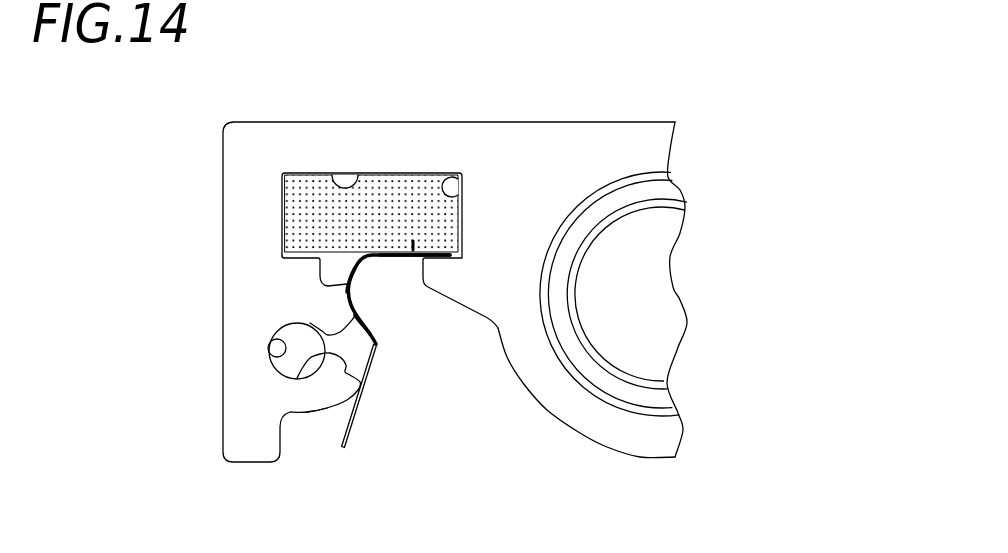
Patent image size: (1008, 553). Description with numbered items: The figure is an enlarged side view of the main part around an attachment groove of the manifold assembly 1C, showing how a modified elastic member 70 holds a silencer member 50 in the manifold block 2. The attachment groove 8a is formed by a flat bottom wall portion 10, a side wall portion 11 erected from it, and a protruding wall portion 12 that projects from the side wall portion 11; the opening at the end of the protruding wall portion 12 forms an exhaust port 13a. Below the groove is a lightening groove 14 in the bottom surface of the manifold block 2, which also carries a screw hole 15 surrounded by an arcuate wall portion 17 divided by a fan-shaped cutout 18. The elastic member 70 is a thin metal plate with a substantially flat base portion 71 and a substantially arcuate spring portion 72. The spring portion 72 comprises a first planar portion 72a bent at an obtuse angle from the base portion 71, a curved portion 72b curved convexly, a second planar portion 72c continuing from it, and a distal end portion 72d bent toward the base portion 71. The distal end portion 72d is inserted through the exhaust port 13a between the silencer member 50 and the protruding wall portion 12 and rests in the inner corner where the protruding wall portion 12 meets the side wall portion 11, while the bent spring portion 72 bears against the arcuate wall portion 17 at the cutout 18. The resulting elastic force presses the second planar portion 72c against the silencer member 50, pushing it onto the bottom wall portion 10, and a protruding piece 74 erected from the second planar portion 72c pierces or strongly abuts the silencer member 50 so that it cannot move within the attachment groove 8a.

The manifold assembly 1C is at (747, 62).
The manifold block 2 is at (612, 423).
The attachment groove 8a is at (293, 147).
The bottom wall portion 10 is at (332, 175).
The side wall portion 11 is at (447, 177).
The protruding wall portion 12 is at (435, 275).
The exhaust port 13a is at (321, 264).
The lightening groove 14 is at (490, 399).
The screw hole 15 is at (293, 357).
The arcuate wall portion 17 is at (316, 429).
The cutout 18 is at (300, 363).
The silencer member 50 is at (310, 215).
The elastic member 70 is at (369, 439).
The base portion 71 is at (367, 375).
The spring portion 72 is at (328, 290).
The first planar portion 72a is at (372, 332).
The curved portion 72b is at (355, 283).
The second planar portion 72c is at (405, 250).
The distal end portion 72d is at (448, 255).
The protruding piece 74 is at (413, 247).